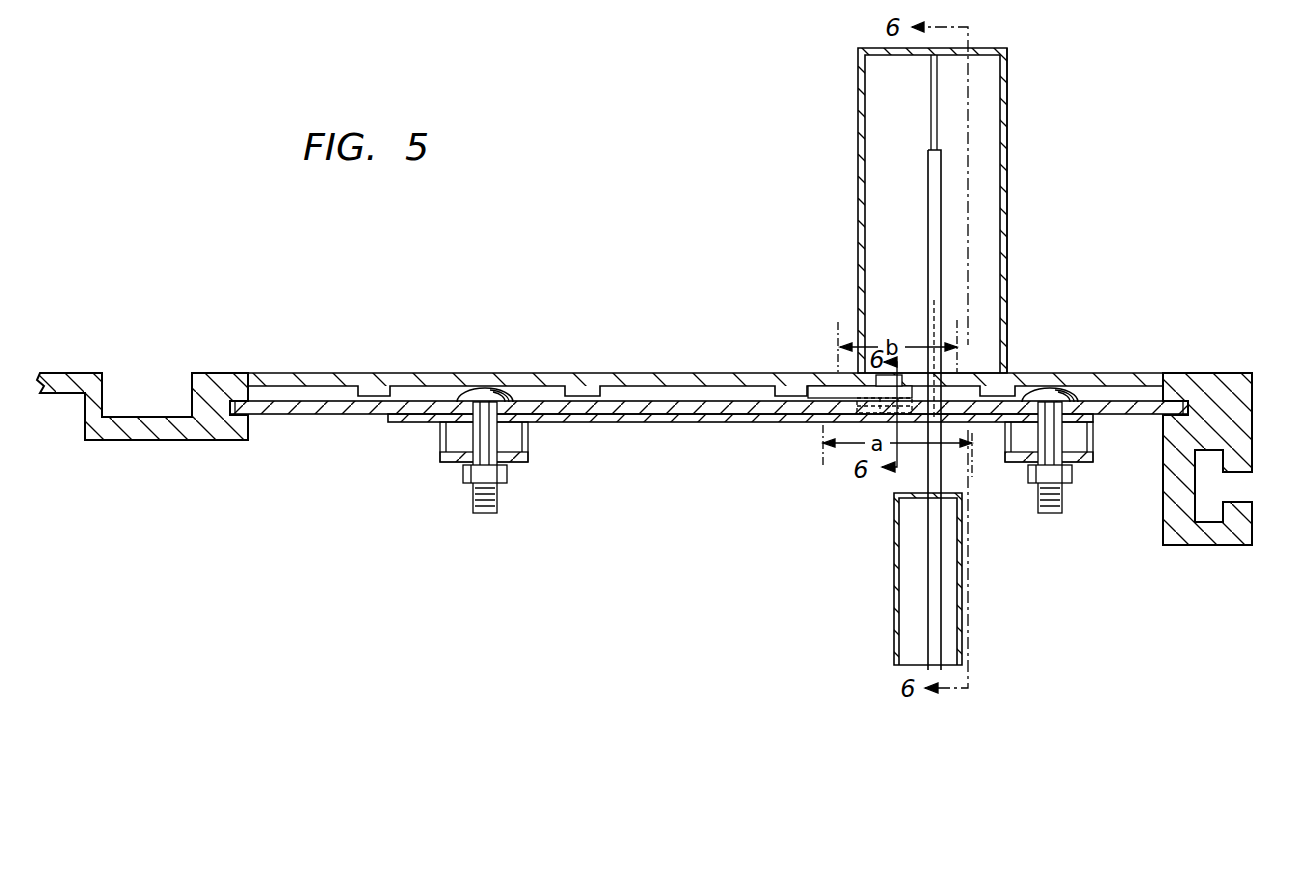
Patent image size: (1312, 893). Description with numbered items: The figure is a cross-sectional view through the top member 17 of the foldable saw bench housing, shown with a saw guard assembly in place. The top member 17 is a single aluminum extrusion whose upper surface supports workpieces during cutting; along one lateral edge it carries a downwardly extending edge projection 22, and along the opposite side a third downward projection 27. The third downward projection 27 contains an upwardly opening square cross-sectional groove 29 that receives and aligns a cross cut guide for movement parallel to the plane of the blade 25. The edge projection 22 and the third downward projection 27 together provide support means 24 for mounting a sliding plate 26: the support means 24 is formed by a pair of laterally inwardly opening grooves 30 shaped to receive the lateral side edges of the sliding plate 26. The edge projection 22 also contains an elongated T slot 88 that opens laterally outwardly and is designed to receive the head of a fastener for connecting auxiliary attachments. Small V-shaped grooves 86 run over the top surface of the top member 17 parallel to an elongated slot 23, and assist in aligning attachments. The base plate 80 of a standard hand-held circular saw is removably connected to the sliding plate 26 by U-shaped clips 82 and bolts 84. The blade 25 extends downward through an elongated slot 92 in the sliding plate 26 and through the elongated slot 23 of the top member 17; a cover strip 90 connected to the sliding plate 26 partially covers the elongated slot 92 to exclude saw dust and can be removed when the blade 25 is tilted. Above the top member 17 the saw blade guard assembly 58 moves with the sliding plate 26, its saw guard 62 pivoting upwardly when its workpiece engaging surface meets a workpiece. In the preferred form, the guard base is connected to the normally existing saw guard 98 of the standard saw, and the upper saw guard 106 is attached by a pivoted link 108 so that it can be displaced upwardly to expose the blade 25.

The top member 17 is at (637, 372).
The edge projection 22 is at (1178, 541).
The elongated slot 23 is at (953, 372).
The support means 24 is at (259, 430).
The blade 25 is at (930, 170).
The sliding plate 26 is at (1104, 412).
The third downward projection 27 is at (211, 443).
The square cross-sectional groove 29 is at (136, 415).
The laterally inwardly opening grooves 30 is at (232, 405).
The saw blade guard assembly 58 is at (1016, 46).
The saw guard 62 is at (1008, 224).
The base plate 80 is at (690, 424).
The U-shaped clips 82 is at (530, 450).
The bolts 84 is at (494, 511).
The V-shaped grooves 86 is at (501, 372).
The T slot 88 is at (1255, 480).
The cover strip 90 is at (826, 387).
The elongated slot 92 is at (963, 409).
The saw guard 98 is at (893, 528).
The saw guard 106 is at (1008, 94).
The pivoted link 108 is at (929, 106).